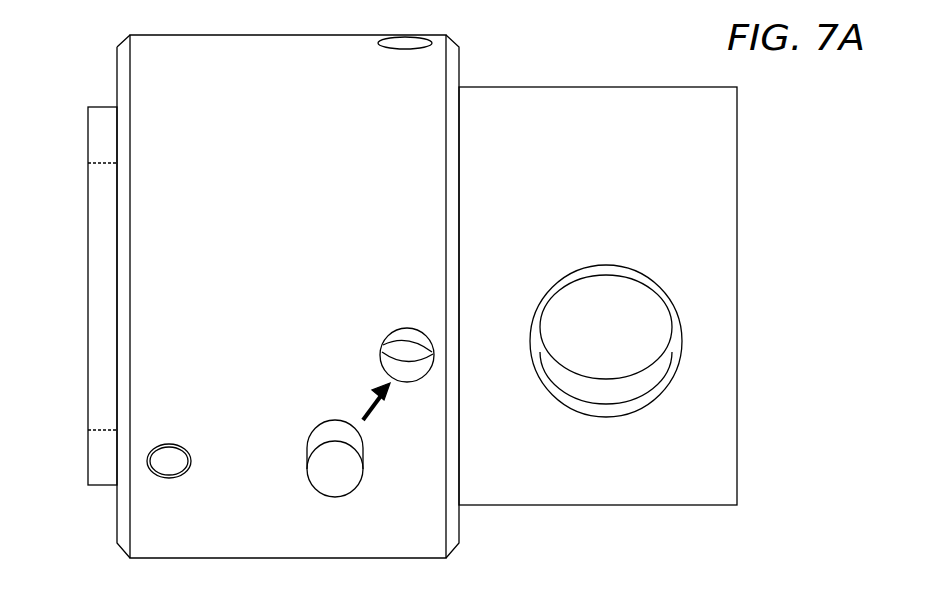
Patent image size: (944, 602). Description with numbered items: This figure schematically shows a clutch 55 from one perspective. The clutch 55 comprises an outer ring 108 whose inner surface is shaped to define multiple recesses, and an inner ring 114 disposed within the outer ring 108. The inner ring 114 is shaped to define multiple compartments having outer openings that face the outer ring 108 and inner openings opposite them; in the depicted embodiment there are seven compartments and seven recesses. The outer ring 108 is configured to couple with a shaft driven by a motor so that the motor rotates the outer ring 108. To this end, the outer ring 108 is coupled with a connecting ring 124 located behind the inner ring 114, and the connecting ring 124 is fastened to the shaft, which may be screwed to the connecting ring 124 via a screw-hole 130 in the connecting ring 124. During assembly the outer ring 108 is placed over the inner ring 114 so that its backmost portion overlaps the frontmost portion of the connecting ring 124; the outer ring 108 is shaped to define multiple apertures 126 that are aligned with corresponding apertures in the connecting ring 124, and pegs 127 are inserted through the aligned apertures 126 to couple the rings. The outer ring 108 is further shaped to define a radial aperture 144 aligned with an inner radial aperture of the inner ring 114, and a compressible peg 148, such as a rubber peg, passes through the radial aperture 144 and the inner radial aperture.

The clutch 55 is at (797, 156).
The outer ring 108 is at (270, 530).
The inner ring 114 is at (100, 107).
The connecting ring 124 is at (587, 497).
The apertures 126 is at (432, 43).
The pegs 127 is at (333, 497).
The screw-hole 130 is at (682, 333).
The radial aperture 144 is at (146, 455).
The compressible peg 148 is at (171, 458).